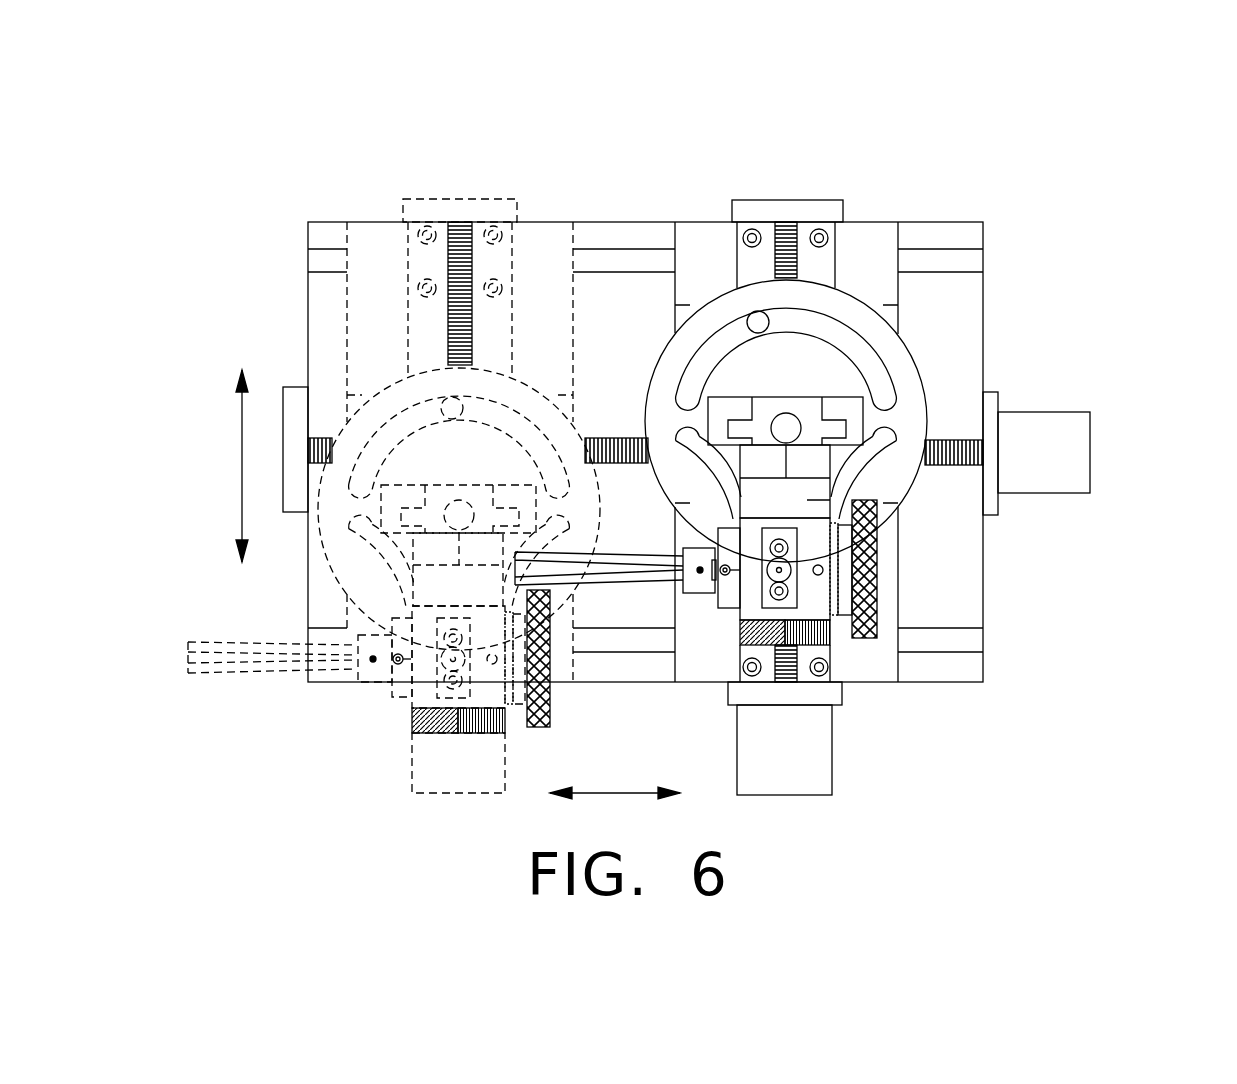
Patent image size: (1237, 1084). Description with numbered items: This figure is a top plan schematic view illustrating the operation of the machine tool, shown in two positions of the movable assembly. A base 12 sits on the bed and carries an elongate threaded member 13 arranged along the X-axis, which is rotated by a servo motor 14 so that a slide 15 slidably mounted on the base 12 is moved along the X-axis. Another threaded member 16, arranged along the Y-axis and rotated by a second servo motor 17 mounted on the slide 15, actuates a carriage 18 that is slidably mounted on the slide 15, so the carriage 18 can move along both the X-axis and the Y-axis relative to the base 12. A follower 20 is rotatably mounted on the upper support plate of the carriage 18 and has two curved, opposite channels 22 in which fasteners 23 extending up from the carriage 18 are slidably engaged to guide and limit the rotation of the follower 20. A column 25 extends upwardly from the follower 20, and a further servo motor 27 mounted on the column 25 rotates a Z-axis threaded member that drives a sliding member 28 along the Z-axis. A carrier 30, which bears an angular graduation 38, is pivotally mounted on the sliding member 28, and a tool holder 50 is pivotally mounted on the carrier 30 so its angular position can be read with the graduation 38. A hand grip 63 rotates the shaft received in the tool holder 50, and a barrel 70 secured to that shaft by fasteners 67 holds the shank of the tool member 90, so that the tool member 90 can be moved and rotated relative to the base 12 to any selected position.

The base 12 is at (967, 230).
The threaded member 13 is at (952, 458).
The servo motor 14 is at (1055, 431).
The slide 15 is at (887, 233).
The threaded member 16 is at (788, 240).
The servo motor 17 is at (803, 783).
The carriage 18 is at (890, 527).
The follower 20 is at (907, 377).
The curved channels 22 is at (863, 353).
The fasteners 23 is at (760, 317).
The column 25 is at (718, 420).
The servo motor 27 is at (793, 423).
The sliding member 28 is at (742, 430).
The carrier 30 is at (793, 502).
The angular graduation 38 is at (752, 645).
The tool holder 50 is at (813, 613).
The hand grip 63 is at (872, 560).
The fasteners 67 is at (718, 575).
The barrel 70 is at (641, 456).
The tool member 90 is at (607, 567).